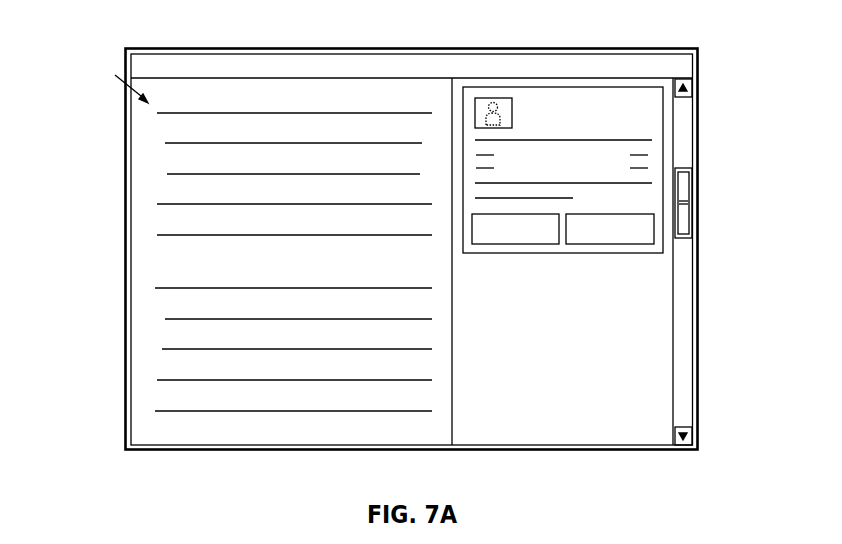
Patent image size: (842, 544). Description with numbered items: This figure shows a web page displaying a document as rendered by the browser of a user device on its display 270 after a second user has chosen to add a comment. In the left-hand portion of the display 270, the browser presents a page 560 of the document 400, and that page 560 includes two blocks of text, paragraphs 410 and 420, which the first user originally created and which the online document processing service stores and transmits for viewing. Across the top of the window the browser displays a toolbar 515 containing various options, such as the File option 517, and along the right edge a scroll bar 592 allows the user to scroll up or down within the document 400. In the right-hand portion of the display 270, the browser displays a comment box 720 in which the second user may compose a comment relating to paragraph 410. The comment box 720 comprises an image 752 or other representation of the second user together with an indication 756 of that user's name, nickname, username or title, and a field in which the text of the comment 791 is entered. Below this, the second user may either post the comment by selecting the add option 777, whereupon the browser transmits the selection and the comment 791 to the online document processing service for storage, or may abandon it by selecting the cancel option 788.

The display 270 is at (650, 48).
The toolbar 515 is at (280, 65).
The File option 517 is at (182, 65).
The page 560 is at (115, 75).
The document 400 is at (145, 248).
The paragraph 410 is at (118, 113).
The paragraph 420 is at (118, 290).
The comment box 720 is at (563, 254).
The image 752 is at (474, 118).
The indication 756 is at (598, 115).
The comment 791 is at (650, 168).
The add option 777 is at (517, 245).
The cancel option 788 is at (607, 245).
The scroll bar 592 is at (683, 306).